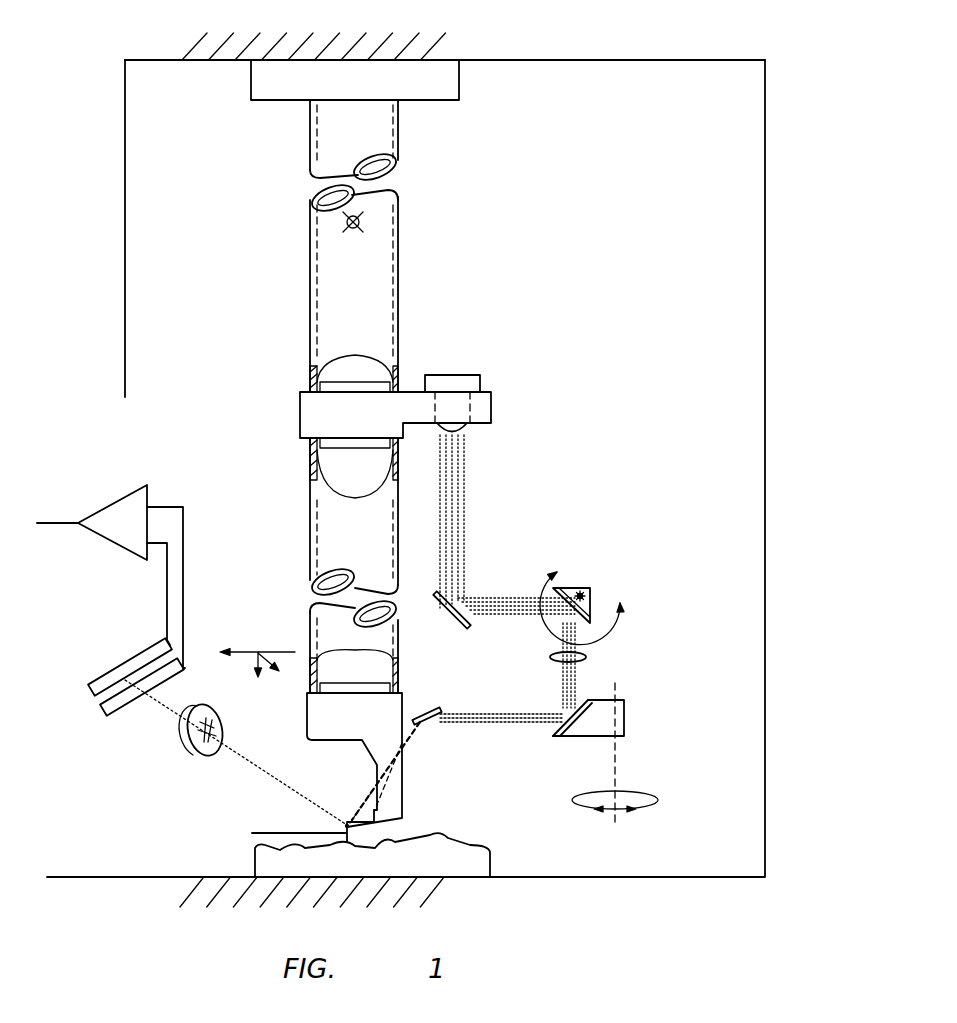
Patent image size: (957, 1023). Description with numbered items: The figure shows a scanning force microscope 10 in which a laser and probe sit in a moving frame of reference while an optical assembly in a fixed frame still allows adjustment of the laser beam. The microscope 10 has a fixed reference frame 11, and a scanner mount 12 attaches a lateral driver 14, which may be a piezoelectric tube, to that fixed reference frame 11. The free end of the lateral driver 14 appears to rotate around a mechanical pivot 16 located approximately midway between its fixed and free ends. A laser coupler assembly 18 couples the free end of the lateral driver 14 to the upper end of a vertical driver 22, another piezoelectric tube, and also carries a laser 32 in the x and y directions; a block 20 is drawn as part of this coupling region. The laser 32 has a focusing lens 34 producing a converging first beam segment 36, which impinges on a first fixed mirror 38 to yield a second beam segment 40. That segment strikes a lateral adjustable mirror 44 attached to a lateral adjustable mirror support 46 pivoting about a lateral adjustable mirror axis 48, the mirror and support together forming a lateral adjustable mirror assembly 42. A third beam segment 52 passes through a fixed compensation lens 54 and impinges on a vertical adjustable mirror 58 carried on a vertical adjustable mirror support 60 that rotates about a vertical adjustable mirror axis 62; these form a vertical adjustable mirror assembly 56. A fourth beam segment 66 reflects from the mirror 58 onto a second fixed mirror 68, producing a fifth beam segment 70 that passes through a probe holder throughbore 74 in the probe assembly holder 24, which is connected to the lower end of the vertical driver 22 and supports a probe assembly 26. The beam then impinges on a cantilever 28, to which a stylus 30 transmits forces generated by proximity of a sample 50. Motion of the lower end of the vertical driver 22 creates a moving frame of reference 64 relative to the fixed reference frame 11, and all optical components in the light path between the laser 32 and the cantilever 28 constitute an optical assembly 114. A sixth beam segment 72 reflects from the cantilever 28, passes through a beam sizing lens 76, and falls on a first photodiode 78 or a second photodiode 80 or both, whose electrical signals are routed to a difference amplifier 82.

The microscope 10 is at (783, 118).
The fixed reference frame 11 is at (612, 60).
The scanner mount 12 is at (433, 78).
The lateral driver 14 is at (372, 318).
The mechanical pivot 16 is at (360, 218).
The laser coupler assembly 18 is at (490, 388).
The light source mounting block 20 is at (485, 403).
The vertical driver 22 is at (327, 540).
The probe assembly holder 24 is at (307, 717).
The probe assembly 26 is at (415, 813).
The cantilever 28 is at (343, 826).
The stylus 30 is at (283, 835).
The laser 32 is at (463, 380).
The focusing lens 34 is at (467, 432).
The first beam segment 36 is at (458, 510).
The first fixed mirror 38 is at (452, 617).
The second beam segment 40 is at (482, 607).
The lateral adjustable mirror assembly 42 is at (612, 593).
The lateral adjustable mirror 44 is at (560, 588).
The lateral adjustable mirror support 46 is at (578, 592).
The lateral adjustable mirror axis 48 is at (588, 588).
The sample 50 is at (480, 858).
The third beam segment 52 is at (572, 682).
The fixed compensation lens 54 is at (553, 652).
The vertical adjustable mirror assembly 56 is at (621, 748).
The vertical adjustable mirror 58 is at (557, 732).
The vertical adjustable mirror support 60 is at (625, 736).
The vertical adjustable mirror axis 62 is at (617, 690).
The moving frame of reference 64 is at (256, 649).
The fourth beam segment 66 is at (497, 720).
The second fixed mirror 68 is at (440, 708).
The fifth beam segment 70 is at (370, 795).
The sixth beam segment 72 is at (247, 752).
The probe holder throughbore 74 is at (392, 785).
The beam sizing lens 76 is at (190, 743).
The first photodiode 78 is at (88, 688).
The second photodiode 80 is at (105, 713).
The difference amplifier 82 is at (113, 508).
The optical assembly 114 is at (550, 547).